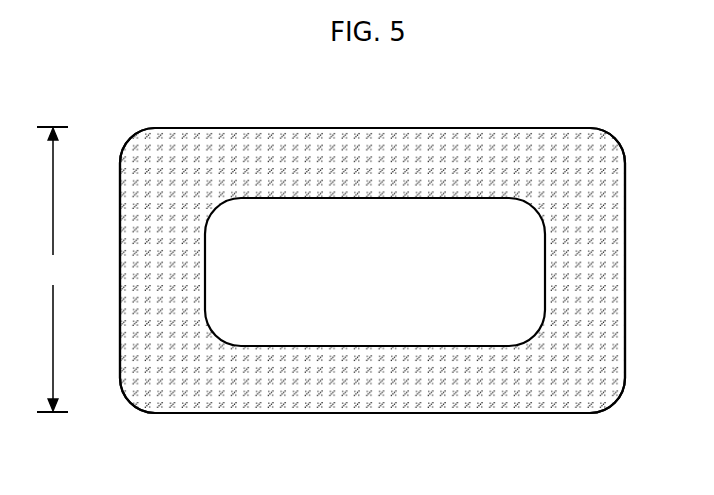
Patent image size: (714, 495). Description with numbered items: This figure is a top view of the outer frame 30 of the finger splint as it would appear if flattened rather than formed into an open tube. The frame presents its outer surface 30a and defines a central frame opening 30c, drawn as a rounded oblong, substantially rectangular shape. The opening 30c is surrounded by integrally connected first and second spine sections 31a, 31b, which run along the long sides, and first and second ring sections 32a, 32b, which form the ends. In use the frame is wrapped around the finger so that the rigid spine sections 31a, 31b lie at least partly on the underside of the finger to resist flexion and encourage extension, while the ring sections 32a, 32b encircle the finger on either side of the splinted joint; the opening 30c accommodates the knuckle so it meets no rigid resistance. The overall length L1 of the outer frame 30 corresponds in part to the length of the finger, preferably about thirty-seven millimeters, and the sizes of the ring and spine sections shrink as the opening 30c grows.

The outer frame 30 is at (624, 108).
The outer surface 30a is at (372, 270).
The frame opening 30c is at (367, 322).
The first spine section 31a is at (143, 277).
The second spine section 31b is at (588, 275).
The first ring section 32a is at (461, 166).
The second ring section 32b is at (440, 382).
The overall length L1 is at (52, 269).